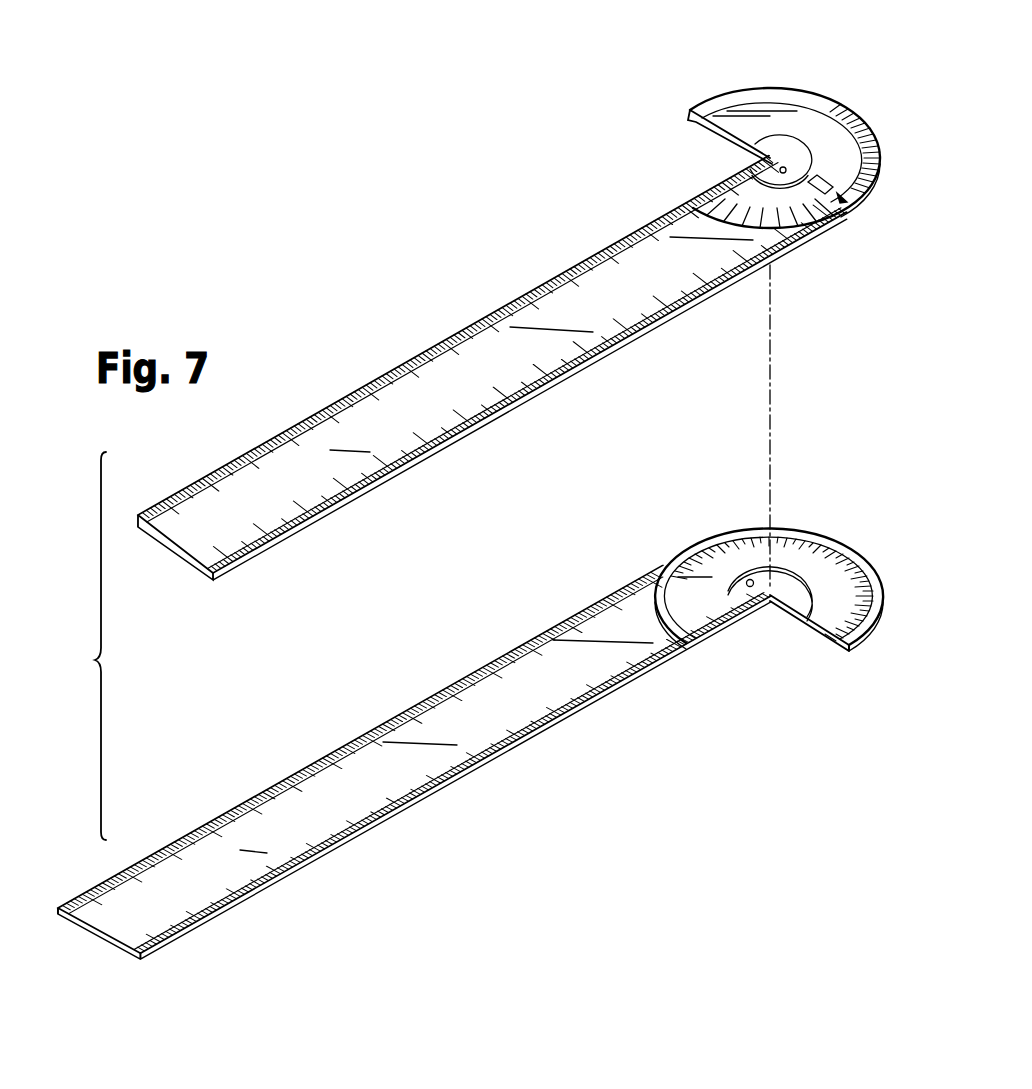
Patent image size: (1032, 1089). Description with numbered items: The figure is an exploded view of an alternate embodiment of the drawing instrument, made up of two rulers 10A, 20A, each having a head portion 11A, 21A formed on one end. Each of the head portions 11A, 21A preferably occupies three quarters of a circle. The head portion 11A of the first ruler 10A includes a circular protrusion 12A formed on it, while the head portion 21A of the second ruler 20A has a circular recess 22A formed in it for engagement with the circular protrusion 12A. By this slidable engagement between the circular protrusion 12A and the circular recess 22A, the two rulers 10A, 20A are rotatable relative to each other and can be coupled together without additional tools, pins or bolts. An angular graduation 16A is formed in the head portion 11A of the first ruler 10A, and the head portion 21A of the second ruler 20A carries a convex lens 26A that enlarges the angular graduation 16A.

The ruler 10A is at (108, 927).
The head portion 11A is at (799, 532).
The circular protrusion 12A is at (690, 564).
The angular graduation 16A is at (835, 563).
The ruler 20A is at (182, 543).
The head portion 21A is at (776, 92).
The circular recess 22A is at (714, 124).
The convex lens 26A is at (838, 196).